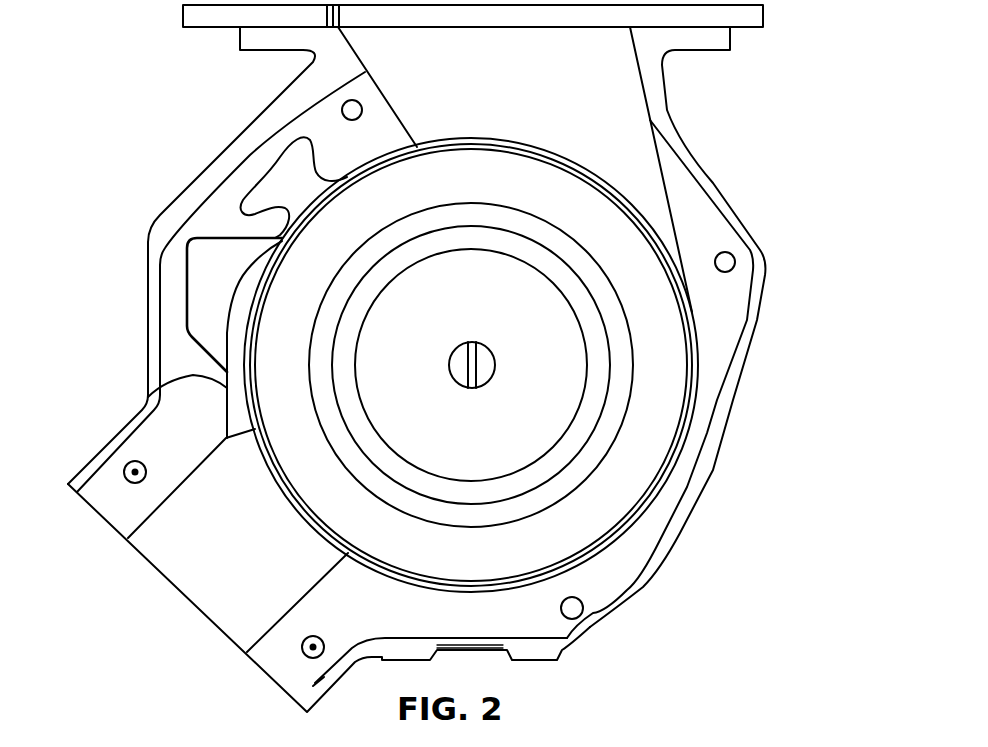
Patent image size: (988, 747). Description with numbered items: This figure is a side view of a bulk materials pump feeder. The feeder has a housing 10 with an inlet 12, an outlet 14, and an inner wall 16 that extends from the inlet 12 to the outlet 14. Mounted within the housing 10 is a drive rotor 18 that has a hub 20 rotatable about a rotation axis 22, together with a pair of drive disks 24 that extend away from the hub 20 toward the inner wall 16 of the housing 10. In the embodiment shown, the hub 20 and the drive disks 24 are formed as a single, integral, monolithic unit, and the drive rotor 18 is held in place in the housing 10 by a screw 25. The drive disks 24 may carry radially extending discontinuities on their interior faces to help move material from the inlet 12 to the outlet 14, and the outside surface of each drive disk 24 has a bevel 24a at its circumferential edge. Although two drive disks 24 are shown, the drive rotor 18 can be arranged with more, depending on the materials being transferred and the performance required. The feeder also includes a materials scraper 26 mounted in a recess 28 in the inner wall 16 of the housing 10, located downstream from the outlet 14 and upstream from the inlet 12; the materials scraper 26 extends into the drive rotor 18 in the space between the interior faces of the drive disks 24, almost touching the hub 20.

The housing 10 is at (737, 208).
The inlet 12 is at (633, 50).
The outlet 14 is at (298, 602).
The inner wall 16 is at (697, 322).
The drive rotor 18 is at (600, 508).
The hub 20 is at (560, 440).
The rotation axis 22 is at (477, 362).
The drive disks 24 is at (652, 483).
The bevel 24a is at (692, 377).
The screw 25 is at (487, 387).
The materials scraper 26 is at (148, 397).
The recess 28 is at (270, 168).